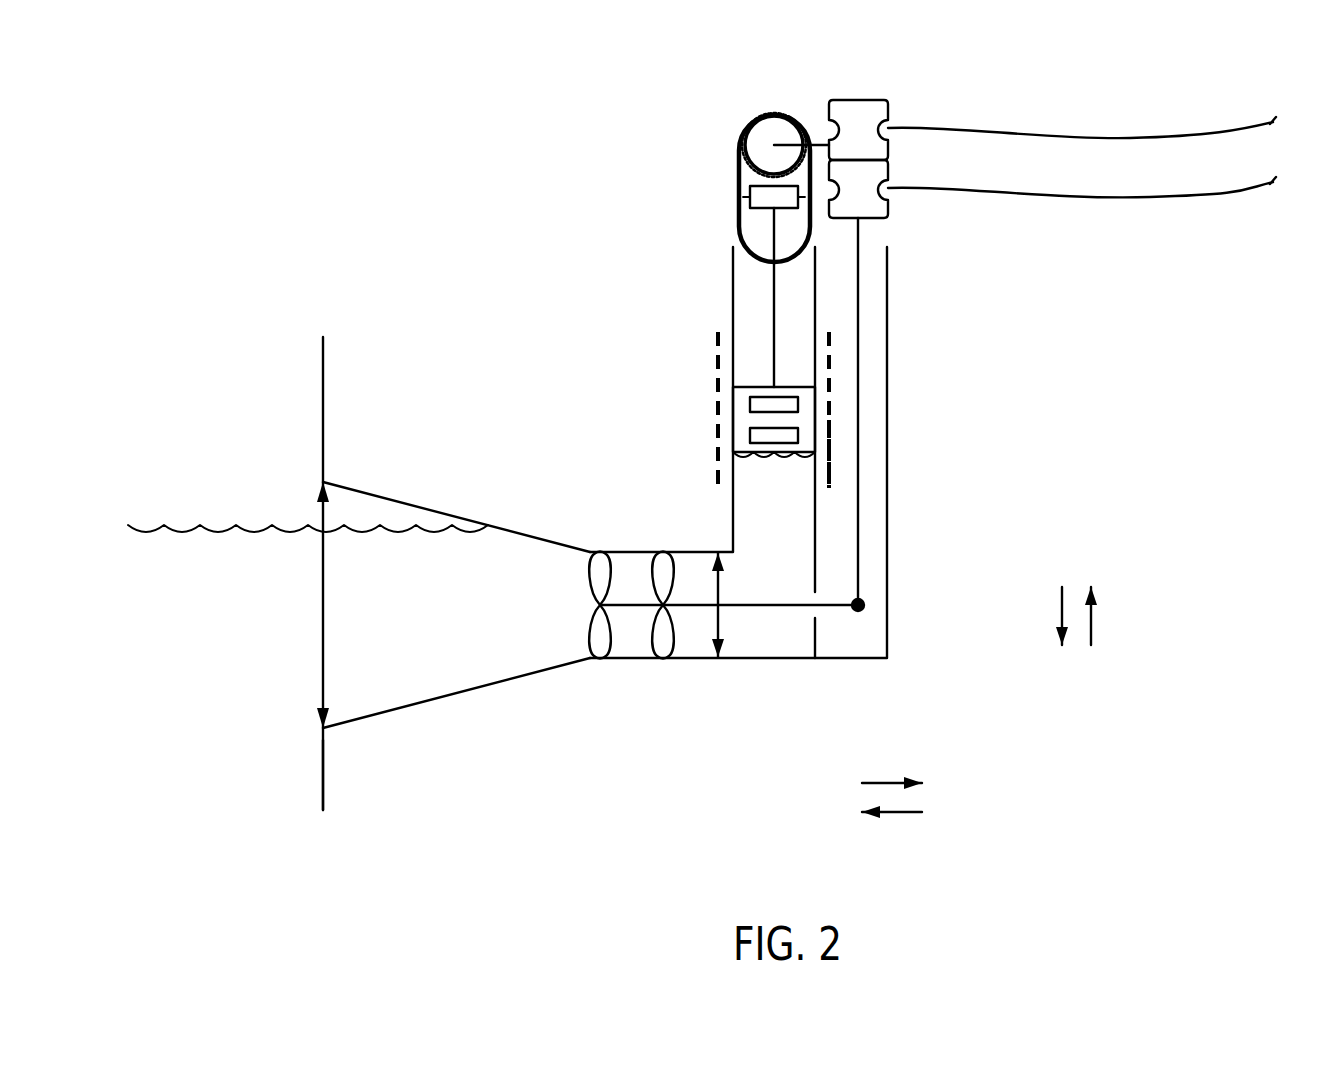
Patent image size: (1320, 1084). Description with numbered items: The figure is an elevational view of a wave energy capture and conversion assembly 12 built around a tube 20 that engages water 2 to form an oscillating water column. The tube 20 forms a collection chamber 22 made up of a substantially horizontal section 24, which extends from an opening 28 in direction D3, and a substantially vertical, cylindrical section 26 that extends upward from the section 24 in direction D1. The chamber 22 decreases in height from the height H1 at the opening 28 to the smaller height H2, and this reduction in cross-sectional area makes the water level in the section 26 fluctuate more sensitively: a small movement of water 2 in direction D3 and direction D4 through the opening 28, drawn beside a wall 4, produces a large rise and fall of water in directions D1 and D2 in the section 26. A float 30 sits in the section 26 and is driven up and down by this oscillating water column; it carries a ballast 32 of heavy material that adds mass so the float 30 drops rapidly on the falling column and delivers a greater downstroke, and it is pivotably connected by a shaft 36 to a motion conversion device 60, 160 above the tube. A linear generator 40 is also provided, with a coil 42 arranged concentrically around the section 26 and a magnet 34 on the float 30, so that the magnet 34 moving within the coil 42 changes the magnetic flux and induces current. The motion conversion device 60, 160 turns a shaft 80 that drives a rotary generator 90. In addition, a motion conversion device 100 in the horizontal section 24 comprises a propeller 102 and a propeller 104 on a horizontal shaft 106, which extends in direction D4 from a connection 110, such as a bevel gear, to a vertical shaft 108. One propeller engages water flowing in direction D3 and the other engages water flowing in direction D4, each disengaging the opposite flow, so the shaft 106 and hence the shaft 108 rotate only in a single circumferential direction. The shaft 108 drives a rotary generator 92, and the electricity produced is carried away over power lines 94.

The wave energy capture and conversion assembly 12 is at (362, 147).
The tube 20 is at (605, 383).
The water or fluid 2 is at (187, 543).
The wall 4 is at (335, 770).
The opening 28 is at (310, 673).
The chamber 22 is at (550, 652).
The section 24 is at (538, 556).
The section 26 is at (750, 340).
The float 30 is at (802, 423).
The ballast or weight 32 is at (752, 433).
The magnet 34 is at (752, 402).
The shaft 36 is at (773, 290).
The linear generator or alternator 40 is at (840, 355).
The coil 42 is at (833, 432).
The motion conversion device or point absorber 60 is at (714, 188).
The motion conversion device or point absorber 160 is at (730, 174).
The shaft 80 is at (822, 143).
The generator 90 is at (866, 113).
The generator 92 is at (878, 208).
The power lines 94 is at (1185, 137).
The motion conversion device 100 is at (646, 615).
The propeller 102 is at (600, 565).
The propeller 104 is at (663, 565).
The shaft 106 is at (777, 608).
The shaft 108 is at (860, 512).
The connection 110 is at (865, 608).
The height H1 is at (323, 585).
The height H2 is at (718, 596).
The direction D1 is at (1091, 623).
The direction D2 is at (1062, 605).
The direction D3 is at (890, 783).
The direction D4 is at (893, 812).